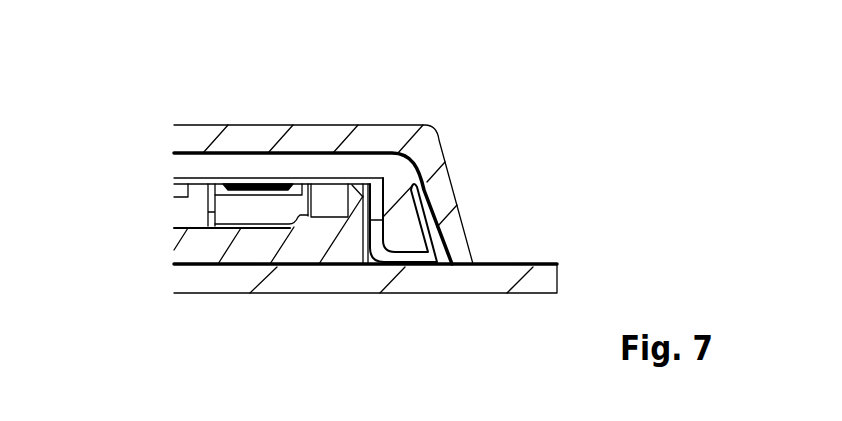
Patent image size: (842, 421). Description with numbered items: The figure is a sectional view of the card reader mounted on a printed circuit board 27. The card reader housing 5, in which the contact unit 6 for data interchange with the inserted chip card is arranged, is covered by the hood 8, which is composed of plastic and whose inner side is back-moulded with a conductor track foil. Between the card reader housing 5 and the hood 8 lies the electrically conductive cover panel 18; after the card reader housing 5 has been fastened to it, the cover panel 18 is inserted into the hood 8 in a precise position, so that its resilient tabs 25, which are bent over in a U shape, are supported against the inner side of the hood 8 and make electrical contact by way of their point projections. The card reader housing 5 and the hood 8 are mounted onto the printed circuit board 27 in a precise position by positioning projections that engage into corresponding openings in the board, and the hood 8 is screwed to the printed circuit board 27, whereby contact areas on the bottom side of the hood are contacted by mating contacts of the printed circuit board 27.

The card reader housing 5 is at (183, 245).
The contact unit 6 is at (188, 211).
The hood 8 is at (257, 138).
The cover panel 18 is at (332, 182).
The resilient tab 25 is at (424, 184).
The printed circuit board 27 is at (497, 280).